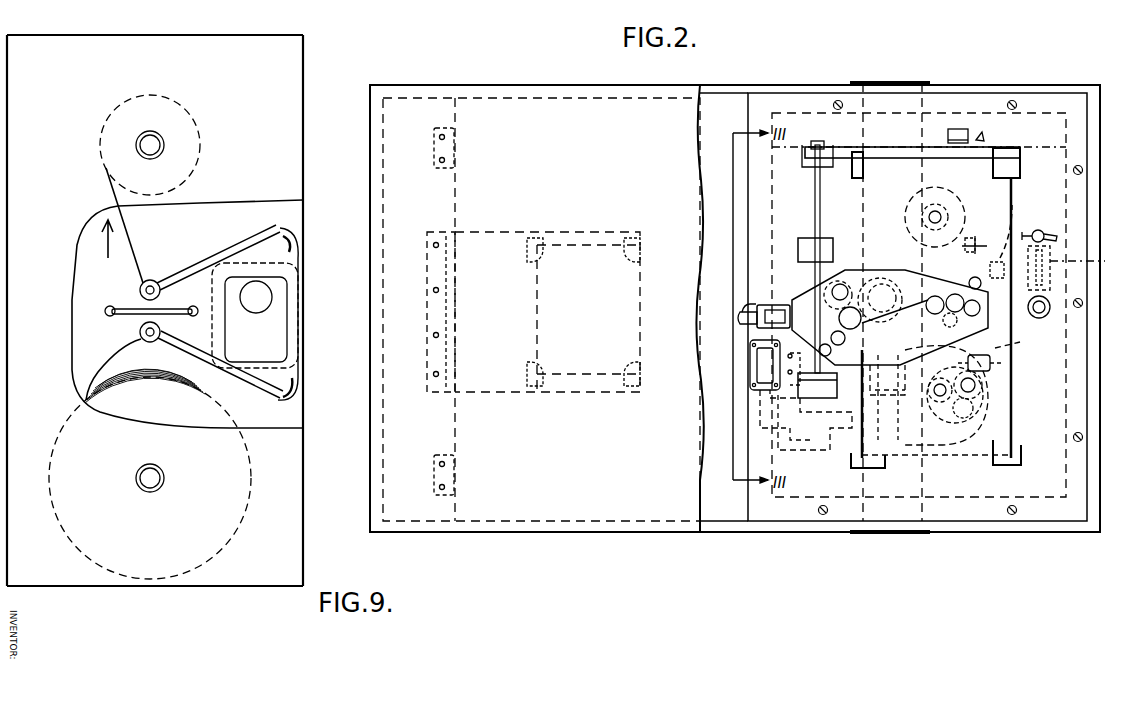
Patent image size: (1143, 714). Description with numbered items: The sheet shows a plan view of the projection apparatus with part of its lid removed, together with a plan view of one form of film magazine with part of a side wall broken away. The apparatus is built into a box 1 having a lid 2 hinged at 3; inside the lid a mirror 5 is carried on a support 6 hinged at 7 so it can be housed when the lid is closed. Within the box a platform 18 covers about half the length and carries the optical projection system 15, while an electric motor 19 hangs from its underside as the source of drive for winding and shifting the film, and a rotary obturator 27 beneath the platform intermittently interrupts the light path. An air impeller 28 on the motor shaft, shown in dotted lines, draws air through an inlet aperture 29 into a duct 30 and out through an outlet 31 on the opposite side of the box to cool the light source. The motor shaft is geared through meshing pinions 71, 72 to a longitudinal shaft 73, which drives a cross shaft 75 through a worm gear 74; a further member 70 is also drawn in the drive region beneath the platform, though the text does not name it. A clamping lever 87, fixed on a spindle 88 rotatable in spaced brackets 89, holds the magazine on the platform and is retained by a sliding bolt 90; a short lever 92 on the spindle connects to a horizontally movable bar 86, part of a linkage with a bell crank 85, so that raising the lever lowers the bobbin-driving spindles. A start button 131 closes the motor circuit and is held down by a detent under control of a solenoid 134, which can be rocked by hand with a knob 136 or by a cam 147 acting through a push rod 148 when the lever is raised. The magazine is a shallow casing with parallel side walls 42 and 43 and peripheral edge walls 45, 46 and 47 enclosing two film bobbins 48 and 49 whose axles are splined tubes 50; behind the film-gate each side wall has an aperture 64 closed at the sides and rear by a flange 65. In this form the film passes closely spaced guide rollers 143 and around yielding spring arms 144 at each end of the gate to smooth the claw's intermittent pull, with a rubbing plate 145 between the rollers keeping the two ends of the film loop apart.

In FIG. 2, the box 1 is at (722, 525).
In FIG. 2, the lid 2 is at (630, 512).
In FIG. 2, the hinge 3 is at (456, 149).
In FIG. 2, the reflecting mirror 5 is at (640, 296).
In FIG. 2, the support 6 is at (490, 236).
In FIG. 2, the hinge of support 7 is at (457, 320).
In FIG. 2, the optical projection system 15 is at (770, 305).
In FIG. 2, the platform 18 is at (786, 512).
In FIG. 2, the electric motor 19 is at (818, 450).
In FIG. 2, the rotary obturator 27 is at (827, 250).
In FIG. 2, the air impeller 28 is at (902, 473).
In FIG. 2, the inlet aperture 29 is at (880, 534).
In FIG. 2, the duct 30 is at (860, 112).
In FIG. 2, the outlet 31 is at (882, 82).
In FIG. 9, the side wall 42 is at (300, 138).
In FIG. 2, the side wall 42 is at (975, 450).
In FIG. 9, the side wall 43 is at (117, 587).
In FIG. 9, the peripheral edge wall 45 is at (8, 348).
In FIG. 9, the peripheral edge wall 46 is at (118, 36).
In FIG. 9, the peripheral edge wall 47 is at (301, 466).
In FIG. 9, the film bobbin 48 is at (152, 96).
In FIG. 2, the film bobbin 48 is at (916, 200).
In FIG. 9, the film bobbin 49 is at (231, 533).
In FIG. 9, the splined tube 50 is at (156, 142).
In FIG. 9, the aperture 64 is at (268, 326).
In FIG. 9, the flange 65 is at (273, 268).
In FIG. 2, the sub-frame 70 is at (1020, 155).
In FIG. 2, the pinion 71 is at (760, 397).
In FIG. 2, the pinion 72 is at (748, 369).
In FIG. 2, the longitudinal shaft 73 is at (950, 388).
In FIG. 2, the worm gear 74 is at (1004, 363).
In FIG. 2, the cross shaft 75 is at (1020, 343).
In FIG. 2, the bell crank 85 is at (988, 133).
In FIG. 2, the horizontally movable bar 86 is at (896, 147).
In FIG. 2, the clamping lever 87 is at (948, 290).
In FIG. 2, the spindle 88 is at (821, 222).
In FIG. 2, the bracket 89 is at (808, 240).
In FIG. 2, the sliding bolt 90 is at (748, 328).
In FIG. 2, the short lever 92 is at (809, 148).
In FIG. 2, the start button 131 is at (1040, 318).
In FIG. 2, the solenoid 134 is at (1091, 268).
In FIG. 2, the knob 136 is at (1038, 230).
In FIG. 9, the guide roller 143 is at (152, 279).
In FIG. 9, the yielding spring arm 144 is at (262, 238).
In FIG. 9, the rubbing plate 145 is at (125, 316).
In FIG. 2, the cam 147 is at (958, 252).
In FIG. 2, the push rod 148 is at (1010, 203).